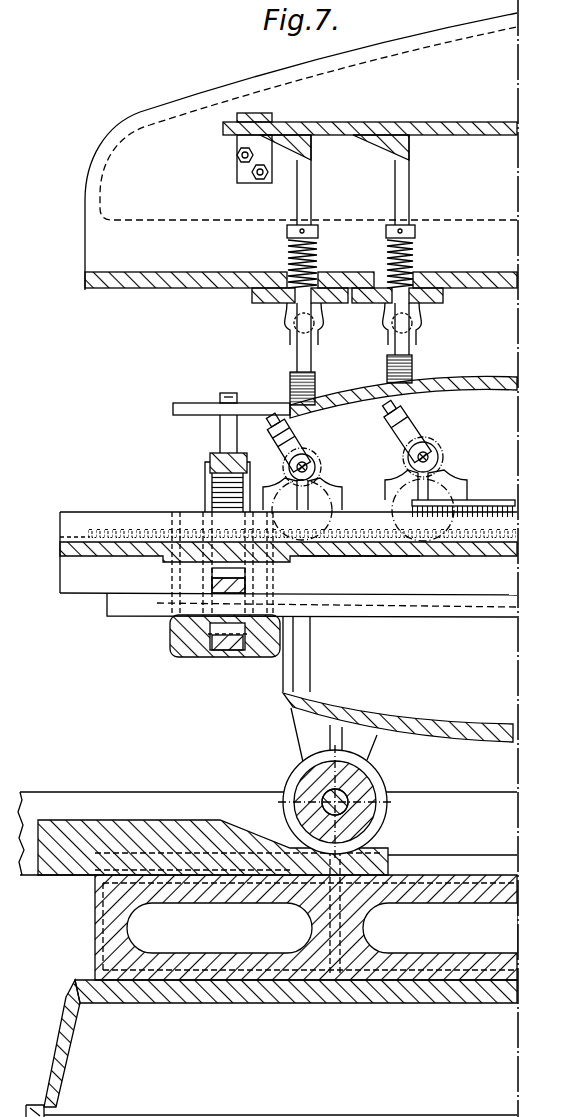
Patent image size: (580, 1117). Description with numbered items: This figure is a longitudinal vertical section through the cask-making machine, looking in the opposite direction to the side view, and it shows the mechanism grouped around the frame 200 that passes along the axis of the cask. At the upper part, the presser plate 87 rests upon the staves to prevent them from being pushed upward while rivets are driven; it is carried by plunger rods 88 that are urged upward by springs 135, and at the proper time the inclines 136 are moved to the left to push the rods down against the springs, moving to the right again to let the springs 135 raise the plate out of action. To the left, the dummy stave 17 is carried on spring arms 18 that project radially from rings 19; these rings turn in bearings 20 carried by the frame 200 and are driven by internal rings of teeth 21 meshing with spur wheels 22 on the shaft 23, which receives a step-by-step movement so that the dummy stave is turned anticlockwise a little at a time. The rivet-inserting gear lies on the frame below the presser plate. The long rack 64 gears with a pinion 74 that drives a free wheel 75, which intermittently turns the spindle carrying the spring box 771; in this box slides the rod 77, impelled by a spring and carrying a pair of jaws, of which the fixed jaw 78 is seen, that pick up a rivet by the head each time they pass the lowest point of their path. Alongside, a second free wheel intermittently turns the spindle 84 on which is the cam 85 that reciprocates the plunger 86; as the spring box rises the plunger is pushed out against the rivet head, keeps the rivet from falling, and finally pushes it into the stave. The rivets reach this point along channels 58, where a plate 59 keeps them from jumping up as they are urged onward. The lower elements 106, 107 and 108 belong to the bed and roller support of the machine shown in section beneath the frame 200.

The inclines 136 is at (290, 158).
The plunger rods 88 is at (410, 194).
The springs 135 is at (317, 252).
The presser plate 87 is at (363, 388).
The dummy stave 17 is at (260, 410).
The spring arms 18 is at (221, 432).
The rings 19 is at (210, 465).
The internal rings of teeth 21 is at (222, 477).
The rod 77 is at (282, 451).
The fixed jaw 78 is at (266, 427).
The plunger 86 is at (288, 442).
The free wheel 75 is at (316, 456).
The spindle 84 is at (317, 467).
The cam 85 is at (323, 476).
The pinion 74 is at (324, 512).
The spring box 771 is at (408, 432).
The plate 59 is at (481, 522).
The long rack 64 is at (126, 524).
The channels 58 is at (480, 532).
The frame 200 is at (358, 556).
The spur wheels 22 is at (235, 573).
The shaft 23 is at (120, 608).
The bearings 20 is at (173, 627).
The beam 106 is at (451, 737).
The rail 108 is at (125, 820).
The roller 107 is at (378, 784).